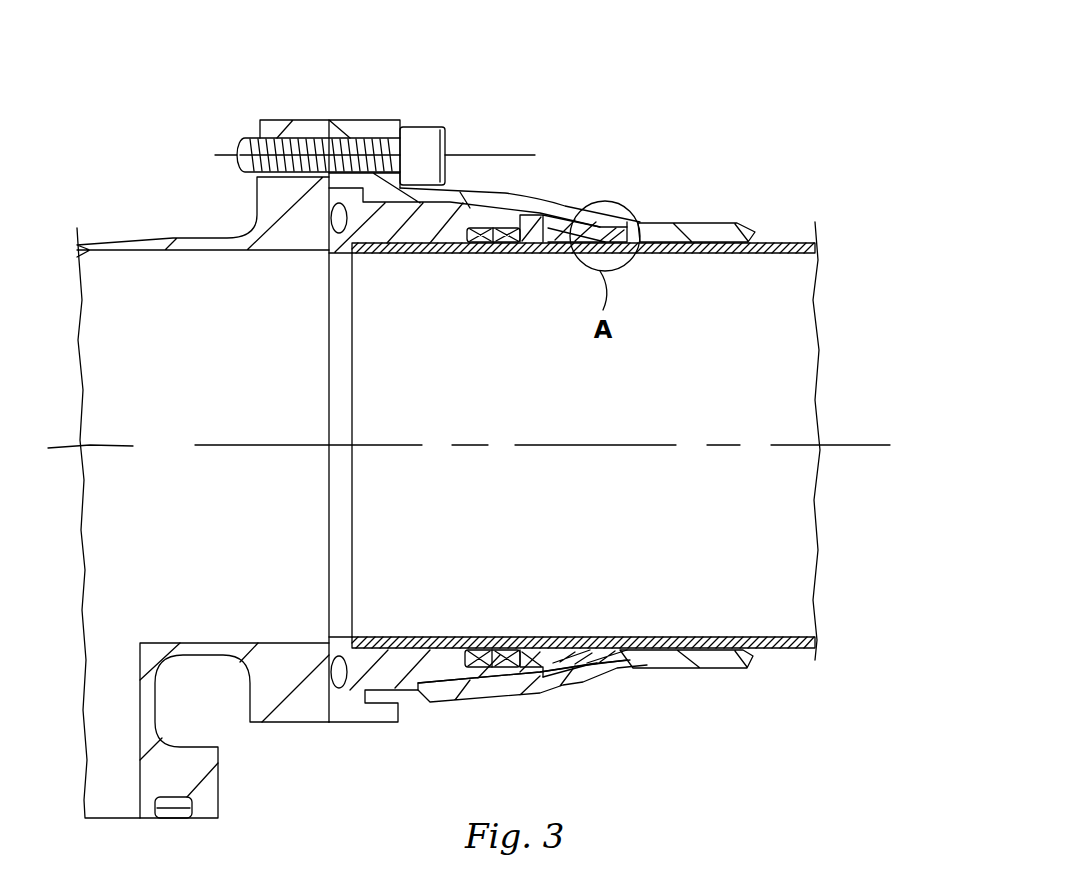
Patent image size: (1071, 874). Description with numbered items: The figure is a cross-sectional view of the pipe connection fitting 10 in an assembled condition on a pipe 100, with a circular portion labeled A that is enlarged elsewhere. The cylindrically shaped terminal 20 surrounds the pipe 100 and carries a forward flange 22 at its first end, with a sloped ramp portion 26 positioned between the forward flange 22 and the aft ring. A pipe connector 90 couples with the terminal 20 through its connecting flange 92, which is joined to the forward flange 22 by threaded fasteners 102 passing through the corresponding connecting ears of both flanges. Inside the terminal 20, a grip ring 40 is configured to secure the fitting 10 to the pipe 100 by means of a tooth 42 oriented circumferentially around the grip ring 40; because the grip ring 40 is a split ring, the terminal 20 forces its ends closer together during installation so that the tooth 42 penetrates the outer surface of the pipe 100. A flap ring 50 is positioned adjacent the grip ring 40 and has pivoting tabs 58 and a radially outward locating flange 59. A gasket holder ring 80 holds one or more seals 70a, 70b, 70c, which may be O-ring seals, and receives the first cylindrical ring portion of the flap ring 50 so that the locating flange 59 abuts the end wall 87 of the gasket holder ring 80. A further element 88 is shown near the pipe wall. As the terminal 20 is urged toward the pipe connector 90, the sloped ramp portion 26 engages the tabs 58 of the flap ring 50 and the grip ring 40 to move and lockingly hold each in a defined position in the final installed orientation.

The connection fitting 10 is at (719, 100).
The terminal 20 is at (447, 700).
The forward flange 22 is at (353, 120).
The sloped ramp portion 26 is at (628, 663).
The grip ring 40 is at (641, 223).
The tooth 42 is at (598, 640).
The flap ring 50 is at (600, 222).
The tabs 58 is at (578, 675).
The locating flange 59 is at (547, 687).
The seal 70a is at (331, 216).
The seal 70b is at (483, 228).
The seal 70c is at (511, 214).
The gasket holder ring 80 is at (378, 673).
The end wall 87 is at (556, 212).
The retaining ring 88 is at (372, 636).
The pipe connector 90 is at (150, 238).
The connecting flange 92 is at (285, 120).
The pipe 100 is at (613, 500).
The threaded fasteners 102 is at (425, 141).